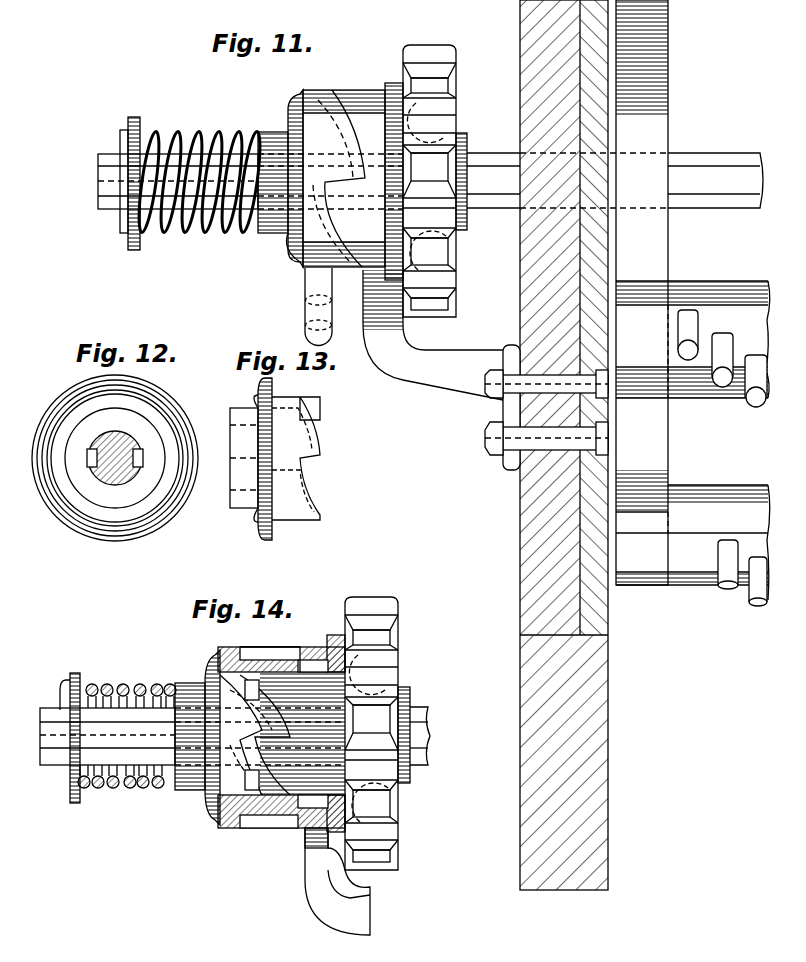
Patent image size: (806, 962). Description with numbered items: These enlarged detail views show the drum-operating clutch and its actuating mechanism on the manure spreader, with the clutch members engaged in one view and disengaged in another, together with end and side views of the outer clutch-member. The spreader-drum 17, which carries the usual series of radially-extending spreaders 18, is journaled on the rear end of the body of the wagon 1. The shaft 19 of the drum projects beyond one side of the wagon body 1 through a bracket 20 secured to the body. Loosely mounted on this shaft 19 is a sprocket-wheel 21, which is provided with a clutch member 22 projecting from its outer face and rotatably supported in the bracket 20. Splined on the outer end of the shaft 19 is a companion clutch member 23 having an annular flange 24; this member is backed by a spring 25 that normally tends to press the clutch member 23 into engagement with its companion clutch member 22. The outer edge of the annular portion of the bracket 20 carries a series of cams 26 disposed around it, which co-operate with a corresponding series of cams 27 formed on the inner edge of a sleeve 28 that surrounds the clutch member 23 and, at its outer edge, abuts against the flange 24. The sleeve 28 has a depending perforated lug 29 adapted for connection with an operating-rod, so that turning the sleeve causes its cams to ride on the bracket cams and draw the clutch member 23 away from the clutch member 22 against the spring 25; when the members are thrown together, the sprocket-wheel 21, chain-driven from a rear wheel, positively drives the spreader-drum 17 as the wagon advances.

In FIG. 11, the body of the wagon 1 is at (526, 264).
In FIG. 11, the spreader-drum 17 is at (664, 124).
In FIG. 11, the spreaders 18 is at (754, 358).
In FIG. 11, the shaft 19 is at (482, 155).
In FIG. 12, the shaft 19 is at (105, 483).
In FIG. 14, the shaft 19 is at (58, 762).
In FIG. 11, the bracket 20 is at (397, 370).
In FIG. 14, the bracket 20 is at (372, 920).
In FIG. 11, the sprocket-wheel 21 is at (455, 72).
In FIG. 14, the sprocket-wheel 21 is at (396, 620).
In FIG. 14, the clutch member 22 is at (282, 733).
In FIG. 11, the companion clutch member 23 is at (273, 182).
In FIG. 12, the companion clutch member 23 is at (138, 495).
In FIG. 13, the companion clutch member 23 is at (322, 450).
In FIG. 14, the companion clutch member 23 is at (200, 792).
In FIG. 11, the annular flange 24 is at (295, 178).
In FIG. 12, the annular flange 24 is at (181, 420).
In FIG. 13, the annular flange 24 is at (273, 532).
In FIG. 14, the annular flange 24 is at (207, 660).
In FIG. 11, the spring 25 is at (212, 212).
In FIG. 14, the spring 25 is at (147, 778).
In FIG. 11, the cams 26 is at (352, 110).
In FIG. 14, the cams 26 is at (285, 648).
In FIG. 11, the cams 27 is at (290, 240).
In FIG. 14, the cams 27 is at (300, 828).
In FIG. 11, the sleeve 28 is at (351, 171).
In FIG. 14, the sleeve 28 is at (250, 828).
In FIG. 11, the depending perforated lug 29 is at (330, 333).